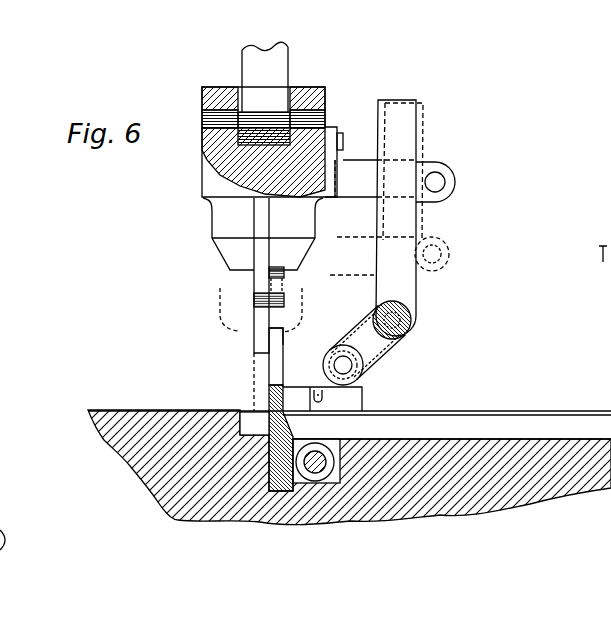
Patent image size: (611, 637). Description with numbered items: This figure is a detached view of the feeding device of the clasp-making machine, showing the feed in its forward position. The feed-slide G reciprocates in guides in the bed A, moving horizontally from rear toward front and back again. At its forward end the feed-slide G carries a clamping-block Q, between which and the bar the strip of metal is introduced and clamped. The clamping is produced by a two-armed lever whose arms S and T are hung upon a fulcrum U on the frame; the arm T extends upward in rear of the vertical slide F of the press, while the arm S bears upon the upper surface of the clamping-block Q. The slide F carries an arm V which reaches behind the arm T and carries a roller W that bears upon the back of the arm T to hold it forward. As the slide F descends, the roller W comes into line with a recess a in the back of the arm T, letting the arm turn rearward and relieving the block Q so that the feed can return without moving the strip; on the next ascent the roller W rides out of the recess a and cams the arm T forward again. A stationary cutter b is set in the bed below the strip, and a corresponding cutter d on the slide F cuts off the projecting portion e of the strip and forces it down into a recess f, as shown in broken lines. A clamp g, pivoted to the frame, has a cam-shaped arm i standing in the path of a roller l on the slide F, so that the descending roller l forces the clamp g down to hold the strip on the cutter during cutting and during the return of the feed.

The vertical slide F is at (272, 178).
The roller l is at (285, 294).
The cutter d is at (254, 329).
The clamp g is at (283, 380).
The cam-shaped arm i is at (283, 342).
The projecting portion of the strip e is at (253, 393).
The recess f is at (254, 424).
The stationary cutter b is at (281, 438).
The bed A is at (349, 467).
The feed-slide G is at (349, 425).
The clamping-block Q is at (322, 397).
The arm V is at (370, 217).
The arm of the two-armed lever T is at (399, 218).
The recess a is at (449, 262).
The roller W is at (456, 168).
The arm of the two-armed lever S is at (364, 345).
The fulcrum U is at (411, 322).